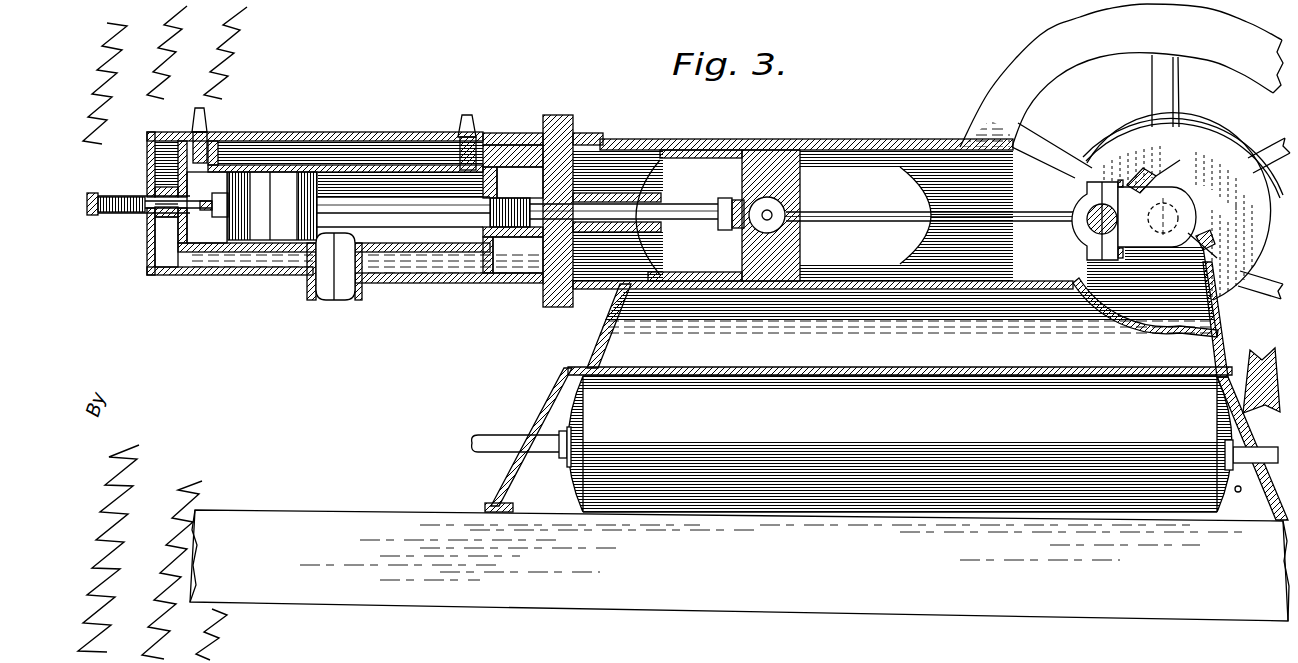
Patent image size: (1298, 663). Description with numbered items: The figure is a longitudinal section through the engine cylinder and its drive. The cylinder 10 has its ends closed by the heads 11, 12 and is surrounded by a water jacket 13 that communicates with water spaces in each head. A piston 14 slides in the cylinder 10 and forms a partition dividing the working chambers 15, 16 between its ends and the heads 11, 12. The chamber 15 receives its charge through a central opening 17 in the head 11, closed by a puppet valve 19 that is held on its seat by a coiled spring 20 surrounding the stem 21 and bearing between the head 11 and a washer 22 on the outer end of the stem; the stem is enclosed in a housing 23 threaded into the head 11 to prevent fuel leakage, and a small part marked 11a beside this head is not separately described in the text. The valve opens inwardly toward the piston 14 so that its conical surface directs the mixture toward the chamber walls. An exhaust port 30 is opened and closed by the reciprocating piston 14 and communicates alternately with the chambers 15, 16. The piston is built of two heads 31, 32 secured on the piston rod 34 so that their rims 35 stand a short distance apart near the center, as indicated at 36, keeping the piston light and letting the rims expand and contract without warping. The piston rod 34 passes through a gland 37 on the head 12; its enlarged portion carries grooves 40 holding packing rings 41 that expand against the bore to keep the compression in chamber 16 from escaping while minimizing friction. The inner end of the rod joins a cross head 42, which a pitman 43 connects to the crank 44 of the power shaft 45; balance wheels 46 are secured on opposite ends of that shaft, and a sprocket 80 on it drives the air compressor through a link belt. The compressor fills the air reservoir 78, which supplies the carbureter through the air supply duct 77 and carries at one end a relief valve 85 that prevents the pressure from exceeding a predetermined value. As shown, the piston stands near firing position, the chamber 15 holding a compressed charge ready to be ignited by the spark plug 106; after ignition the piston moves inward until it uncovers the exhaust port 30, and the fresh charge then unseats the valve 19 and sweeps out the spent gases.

The cylinder 10 is at (354, 166).
The cylinder head 11 is at (147, 157).
The bushing 11a is at (156, 220).
The cylinder head 12 is at (514, 134).
The water jacket 13 is at (311, 138).
The piston 14 is at (262, 240).
The working chamber 15 is at (215, 253).
The working chamber 16 is at (447, 254).
The central opening 17 is at (180, 228).
The puppet valve 19 is at (182, 207).
The coiled spring 20 is at (140, 199).
The valve stem 21 is at (134, 196).
The washer 22 is at (105, 193).
The housing 23 is at (95, 216).
The exhaust port 30 is at (316, 289).
The piston head 31 is at (216, 220).
The piston head 32 is at (403, 206).
The piston rod 34 is at (440, 210).
The rims 35 is at (271, 209).
The space between rims 36 is at (281, 206).
The gland 37 is at (661, 192).
The grooves 40 is at (532, 214).
The packing rings 41 is at (532, 226).
The cross head 42 is at (784, 206).
The pitman 43 is at (866, 212).
The crank 44 is at (1170, 252).
The power shaft 45 is at (1155, 177).
The balance wheels 46 is at (1117, 48).
The air supply duct 77 is at (493, 436).
The air reservoir 78 is at (850, 480).
The sprocket 80 is at (1217, 157).
The relief valve 85 is at (1240, 492).
The spark plug 106 is at (206, 142).